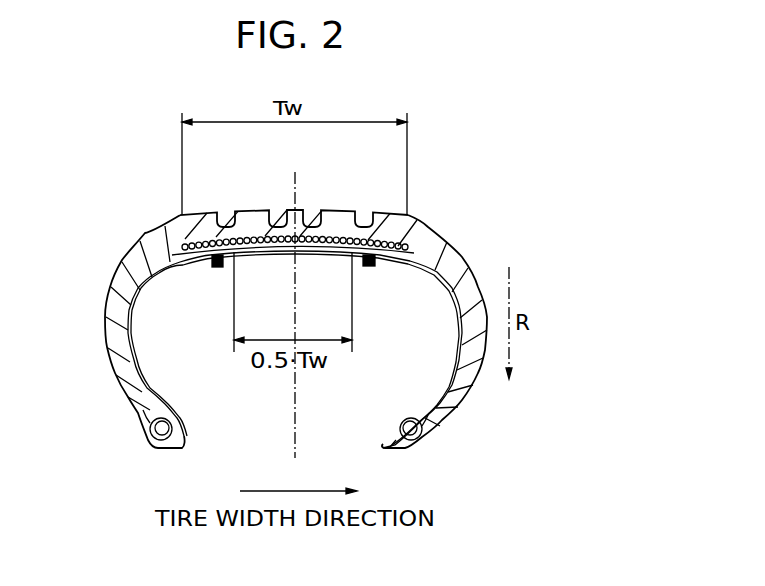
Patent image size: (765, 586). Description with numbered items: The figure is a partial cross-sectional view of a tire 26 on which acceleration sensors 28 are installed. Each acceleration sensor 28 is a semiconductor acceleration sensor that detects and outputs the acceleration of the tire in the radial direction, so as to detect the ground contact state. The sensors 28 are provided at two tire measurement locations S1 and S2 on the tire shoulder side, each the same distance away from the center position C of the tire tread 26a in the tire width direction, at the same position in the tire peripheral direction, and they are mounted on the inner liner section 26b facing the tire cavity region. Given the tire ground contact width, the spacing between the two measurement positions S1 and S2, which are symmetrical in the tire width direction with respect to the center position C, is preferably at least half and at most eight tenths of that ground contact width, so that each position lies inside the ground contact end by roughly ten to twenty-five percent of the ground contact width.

The tire 26 is at (296, 287).
The tire tread 26a is at (257, 218).
The inner liner section 26b is at (137, 360).
The acceleration sensor 28 is at (217, 268).
The tire measurement location S1 is at (205, 257).
The tire measurement location S2 is at (377, 257).
The center position C is at (297, 255).